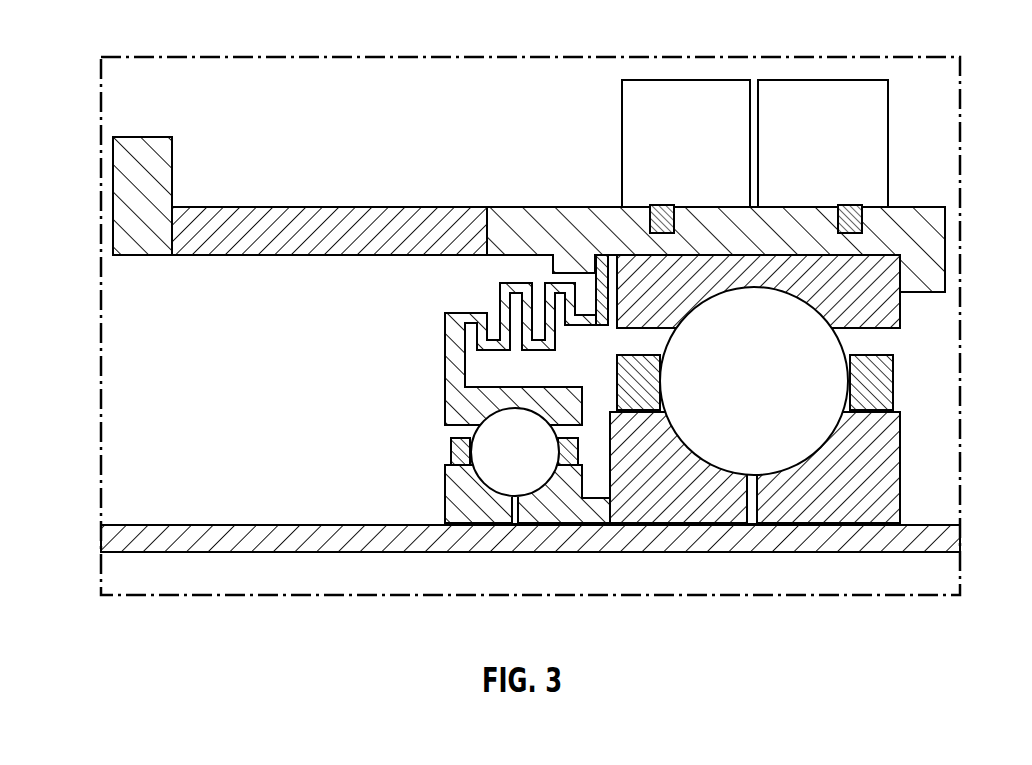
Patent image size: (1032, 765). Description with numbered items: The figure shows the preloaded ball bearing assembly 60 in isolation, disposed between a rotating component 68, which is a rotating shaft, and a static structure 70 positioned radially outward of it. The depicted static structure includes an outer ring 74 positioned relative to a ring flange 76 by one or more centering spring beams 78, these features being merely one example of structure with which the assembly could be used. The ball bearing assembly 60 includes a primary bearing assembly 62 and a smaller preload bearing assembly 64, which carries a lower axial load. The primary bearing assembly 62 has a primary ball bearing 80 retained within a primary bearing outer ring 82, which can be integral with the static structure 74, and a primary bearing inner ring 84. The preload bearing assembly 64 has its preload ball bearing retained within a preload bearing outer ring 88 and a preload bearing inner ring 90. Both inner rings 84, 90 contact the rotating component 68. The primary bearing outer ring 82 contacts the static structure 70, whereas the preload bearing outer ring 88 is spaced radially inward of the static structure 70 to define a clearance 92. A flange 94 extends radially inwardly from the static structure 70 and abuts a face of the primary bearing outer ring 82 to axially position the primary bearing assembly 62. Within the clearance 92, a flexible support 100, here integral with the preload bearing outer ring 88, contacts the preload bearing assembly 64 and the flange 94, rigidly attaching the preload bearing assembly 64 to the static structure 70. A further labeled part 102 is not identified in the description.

The preloaded ball bearing assembly 60 is at (367, 431).
The primary bearing assembly 62 is at (897, 385).
The preload bearing assembly 64 is at (434, 451).
The rotating component 68 is at (337, 553).
The static structure 70 is at (512, 206).
The outer ring 74 is at (927, 262).
The ring flange 76 is at (140, 145).
The centering spring beams 78 is at (270, 216).
The primary ball bearing 80 is at (807, 385).
The primary bearing outer ring 82 is at (887, 320).
The primary bearing inner ring 84 is at (882, 493).
The preload bearing outer ring 88 is at (447, 412).
The preload bearing inner ring 90 is at (467, 515).
The clearance 92 is at (438, 301).
The flange 94 is at (601, 262).
The flexible support 100 is at (512, 290).
The support column 102 is at (447, 325).